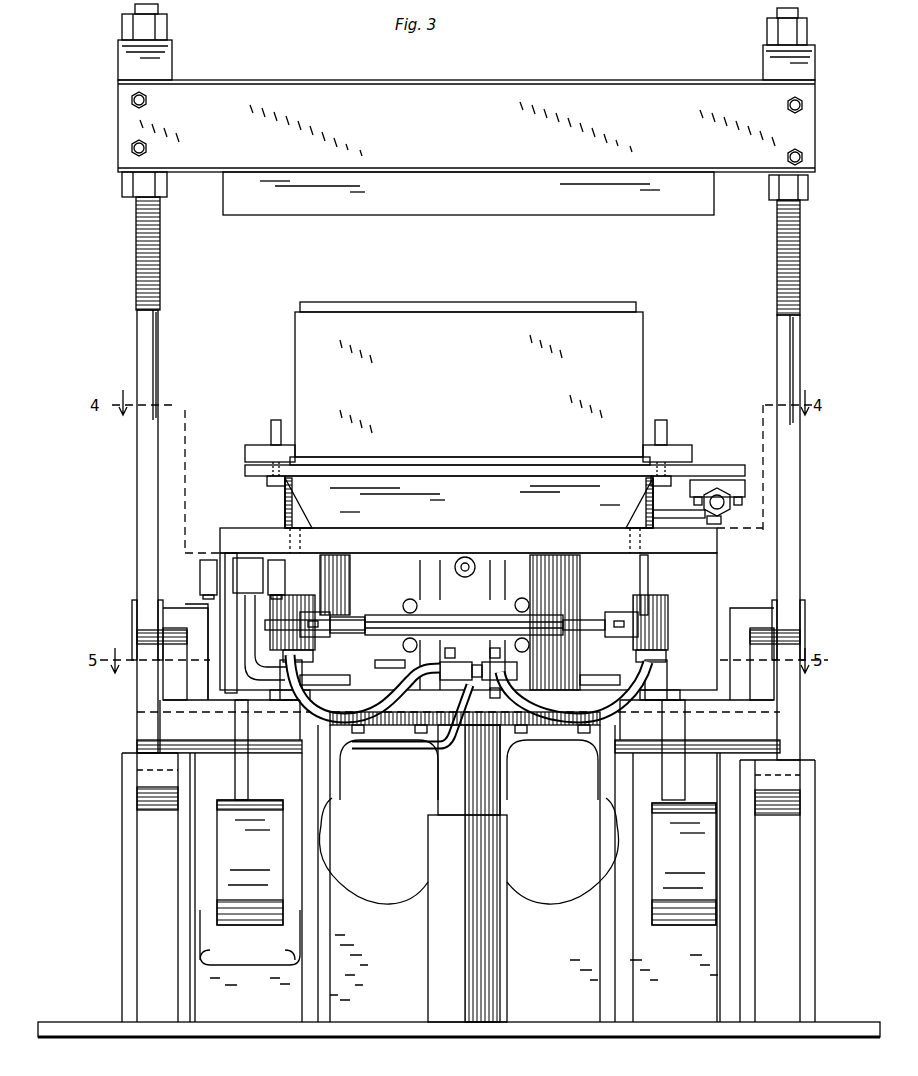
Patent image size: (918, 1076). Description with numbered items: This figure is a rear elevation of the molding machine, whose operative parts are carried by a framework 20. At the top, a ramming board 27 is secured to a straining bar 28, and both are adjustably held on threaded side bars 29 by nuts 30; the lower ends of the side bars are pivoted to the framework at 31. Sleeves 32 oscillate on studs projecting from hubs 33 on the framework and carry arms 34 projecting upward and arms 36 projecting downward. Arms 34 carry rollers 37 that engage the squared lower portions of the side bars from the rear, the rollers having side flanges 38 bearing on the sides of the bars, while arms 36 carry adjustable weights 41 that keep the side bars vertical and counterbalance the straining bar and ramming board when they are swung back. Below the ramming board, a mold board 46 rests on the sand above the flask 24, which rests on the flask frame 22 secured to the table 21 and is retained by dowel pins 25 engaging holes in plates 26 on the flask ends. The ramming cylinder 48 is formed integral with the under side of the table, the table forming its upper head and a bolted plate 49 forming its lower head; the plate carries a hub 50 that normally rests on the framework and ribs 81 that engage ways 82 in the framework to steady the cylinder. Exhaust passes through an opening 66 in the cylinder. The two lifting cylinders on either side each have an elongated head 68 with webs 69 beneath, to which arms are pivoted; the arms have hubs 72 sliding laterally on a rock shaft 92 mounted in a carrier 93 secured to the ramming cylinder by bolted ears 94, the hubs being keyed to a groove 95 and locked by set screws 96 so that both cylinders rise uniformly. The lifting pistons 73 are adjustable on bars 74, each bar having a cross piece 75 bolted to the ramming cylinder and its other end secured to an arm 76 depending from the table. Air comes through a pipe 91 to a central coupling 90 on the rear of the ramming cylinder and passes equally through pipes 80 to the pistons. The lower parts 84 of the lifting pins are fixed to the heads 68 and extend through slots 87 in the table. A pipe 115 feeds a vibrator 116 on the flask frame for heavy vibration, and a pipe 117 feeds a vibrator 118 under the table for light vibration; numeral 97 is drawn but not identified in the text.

The framework 20 is at (133, 958).
The table 21 is at (468, 541).
The flask frame 22 is at (495, 496).
The flask 24 is at (469, 384).
The dowel pins 25 is at (275, 420).
The plates 26 is at (258, 450).
The ramming board 27 is at (468, 193).
The straining bar 28 is at (466, 126).
The threaded side bars 29 is at (140, 524).
The nuts 30 is at (165, 30).
The pivot 31 is at (145, 780).
The sleeves 32 is at (458, 726).
The hubs 33 is at (270, 752).
The arms 34 is at (468, 664).
The arms 36 is at (235, 780).
The rollers 37 is at (145, 620).
The side flanges 38 is at (132, 604).
The weights 41 is at (466, 862).
The mold board 46 is at (455, 301).
The ramming cylinder 48 is at (410, 552).
The plate 49 is at (532, 728).
The hub 50 is at (467, 873).
The opening 66 is at (454, 568).
The elongated head 68 is at (668, 592).
The webs 69 is at (288, 634).
The hubs 72 is at (268, 637).
The lifting pistons 73 is at (670, 668).
The bars 74 is at (477, 704).
The cross piece 75 is at (340, 660).
The arm 76 is at (235, 560).
The pipes 80 is at (380, 672).
The ribs 81 is at (340, 760).
The ways 82 is at (328, 805).
The lower parts of the lifting pins 84 is at (300, 572).
The slots 87 is at (290, 505).
The central coupling 90 is at (471, 673).
The pipe 91 is at (404, 750).
The rock shaft 92 is at (476, 660).
The carrier 93 is at (484, 614).
The ears 94 is at (363, 612).
The groove 95 is at (372, 612).
The set screws 96 is at (320, 622).
The bolt 97 is at (466, 614).
The pipe 115 is at (679, 505).
The vibrator 116 is at (727, 502).
The pipe 117 is at (232, 600).
The vibrator 118 is at (249, 575).